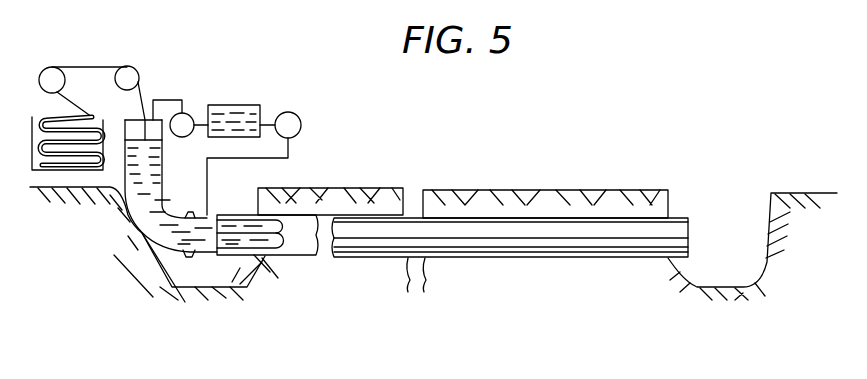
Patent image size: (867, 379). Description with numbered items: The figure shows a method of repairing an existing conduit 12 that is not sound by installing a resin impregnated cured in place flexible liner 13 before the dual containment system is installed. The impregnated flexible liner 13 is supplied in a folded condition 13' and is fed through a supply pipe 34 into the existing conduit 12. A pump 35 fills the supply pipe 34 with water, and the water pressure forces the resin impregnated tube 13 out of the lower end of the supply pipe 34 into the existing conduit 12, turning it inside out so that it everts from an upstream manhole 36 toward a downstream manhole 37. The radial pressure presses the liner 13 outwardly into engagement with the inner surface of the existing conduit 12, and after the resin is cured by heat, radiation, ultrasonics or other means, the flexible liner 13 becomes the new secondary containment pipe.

The existing conduit 12 is at (458, 258).
The flexible liner 13 is at (208, 124).
The folded condition 13' is at (67, 183).
The supply pipe 34 is at (118, 248).
The pump 35 is at (235, 104).
The upstream manhole 36 is at (203, 283).
The downstream manhole 37 is at (715, 287).